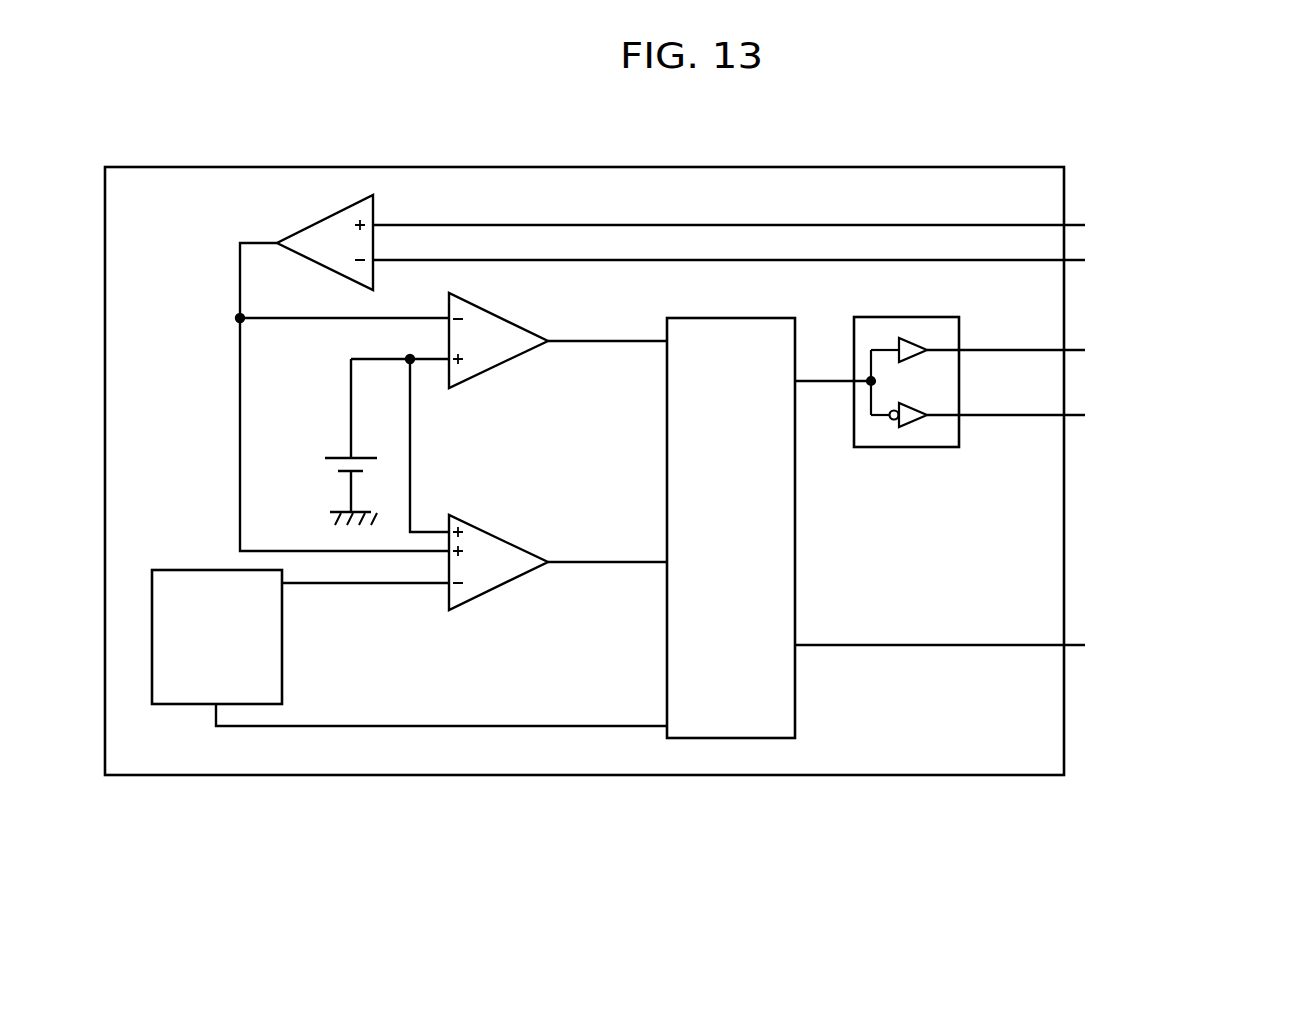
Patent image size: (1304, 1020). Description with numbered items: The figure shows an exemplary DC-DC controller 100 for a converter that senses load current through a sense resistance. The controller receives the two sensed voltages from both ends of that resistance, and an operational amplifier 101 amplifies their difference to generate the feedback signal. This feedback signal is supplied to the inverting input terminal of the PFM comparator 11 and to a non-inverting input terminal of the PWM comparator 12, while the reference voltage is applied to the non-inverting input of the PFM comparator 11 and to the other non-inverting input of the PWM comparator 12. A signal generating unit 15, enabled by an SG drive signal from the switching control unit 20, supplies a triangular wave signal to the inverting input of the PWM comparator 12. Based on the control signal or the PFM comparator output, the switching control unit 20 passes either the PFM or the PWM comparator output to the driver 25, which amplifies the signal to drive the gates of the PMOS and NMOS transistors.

The DC-DC controller 100 is at (200, 165).
The operational amplifier 101 is at (290, 253).
The PFM comparator 11 is at (494, 368).
The PWM comparator 12 is at (488, 593).
The switching control unit 20 is at (733, 317).
The driver 25 is at (905, 449).
The signal generating unit 15 is at (178, 568).